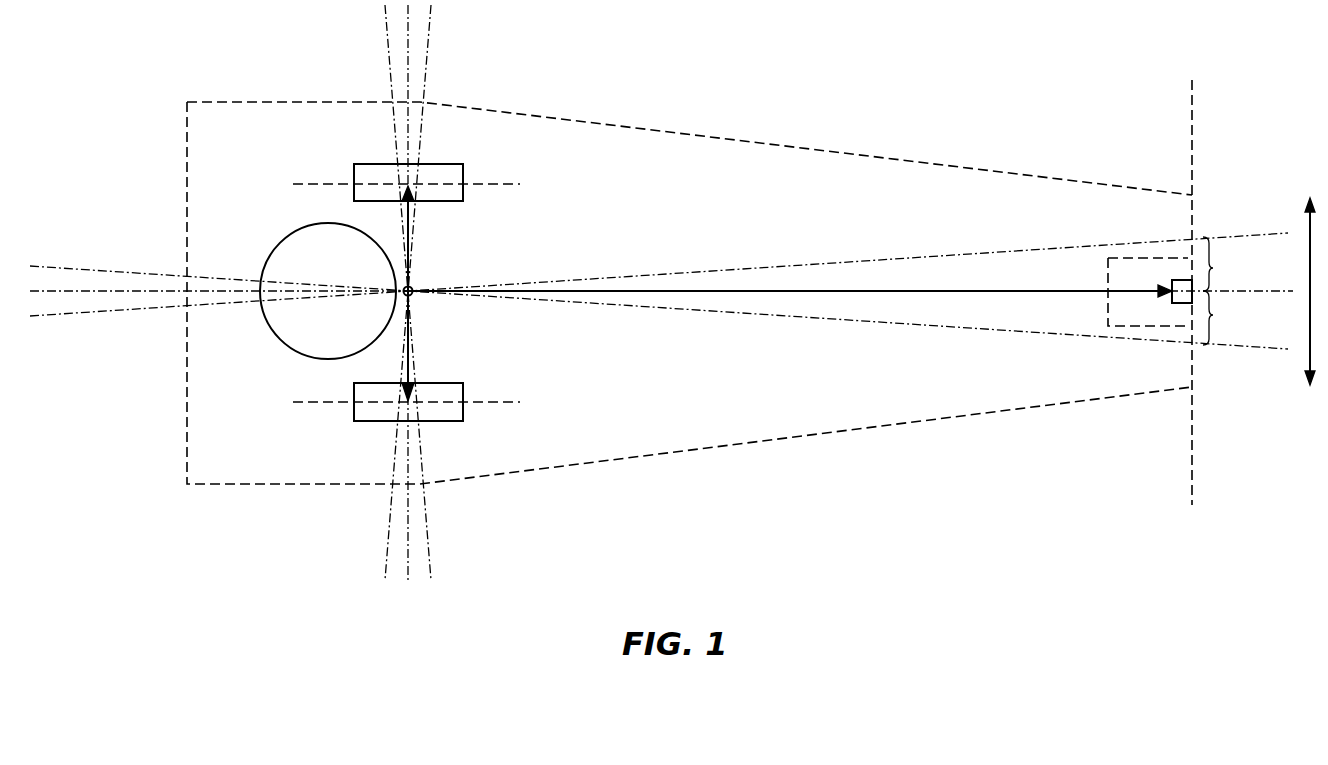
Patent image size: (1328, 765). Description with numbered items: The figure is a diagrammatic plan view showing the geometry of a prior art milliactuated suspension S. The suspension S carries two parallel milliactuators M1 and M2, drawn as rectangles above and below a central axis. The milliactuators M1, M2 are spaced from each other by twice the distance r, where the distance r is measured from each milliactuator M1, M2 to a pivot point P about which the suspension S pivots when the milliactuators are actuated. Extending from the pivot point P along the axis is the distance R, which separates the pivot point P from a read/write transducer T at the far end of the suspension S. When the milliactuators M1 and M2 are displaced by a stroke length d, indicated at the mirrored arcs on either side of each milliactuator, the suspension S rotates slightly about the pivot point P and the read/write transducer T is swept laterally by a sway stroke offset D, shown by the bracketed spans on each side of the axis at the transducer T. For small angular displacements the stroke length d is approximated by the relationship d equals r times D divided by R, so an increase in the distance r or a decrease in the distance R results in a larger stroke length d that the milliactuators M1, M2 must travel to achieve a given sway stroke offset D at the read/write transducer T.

The suspension S is at (778, 96).
The milliactuator M1 is at (463, 195).
The milliactuator M2 is at (463, 390).
The pivot point P is at (411, 283).
The distance from milliactuator to pivot point r is at (410, 243).
The stroke length d is at (407, 182).
The distance between transducer and pivot point R is at (792, 295).
The read/write transducer T is at (1181, 280).
The sway stroke offset D is at (1259, 291).